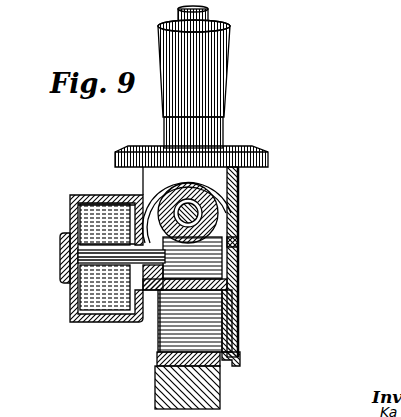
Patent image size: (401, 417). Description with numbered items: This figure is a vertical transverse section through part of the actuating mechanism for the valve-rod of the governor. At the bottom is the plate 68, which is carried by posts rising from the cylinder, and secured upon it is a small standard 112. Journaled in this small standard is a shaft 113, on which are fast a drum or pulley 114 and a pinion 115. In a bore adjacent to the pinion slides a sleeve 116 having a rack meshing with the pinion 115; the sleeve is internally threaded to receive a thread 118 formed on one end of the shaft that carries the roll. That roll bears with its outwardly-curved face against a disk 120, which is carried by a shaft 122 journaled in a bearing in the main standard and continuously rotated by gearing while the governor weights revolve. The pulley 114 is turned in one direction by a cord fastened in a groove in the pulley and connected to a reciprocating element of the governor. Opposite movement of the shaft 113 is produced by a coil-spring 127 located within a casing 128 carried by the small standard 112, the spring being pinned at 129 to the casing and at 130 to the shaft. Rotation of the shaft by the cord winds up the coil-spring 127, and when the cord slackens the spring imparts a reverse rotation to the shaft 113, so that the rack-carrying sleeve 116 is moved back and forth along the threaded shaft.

The shaft 122 is at (205, 13).
The disk 120 is at (255, 150).
The thread 118 is at (239, 209).
The sleeve 116 is at (178, 190).
The shaft 113 is at (240, 256).
The pinion 115 is at (232, 288).
The drum or pulley 114 is at (240, 358).
The small standard 112 is at (157, 358).
The plate 68 is at (221, 390).
The casing 128 is at (72, 201).
The pin 130 is at (80, 226).
The coil-spring 127 is at (72, 295).
The pin 129 is at (115, 322).